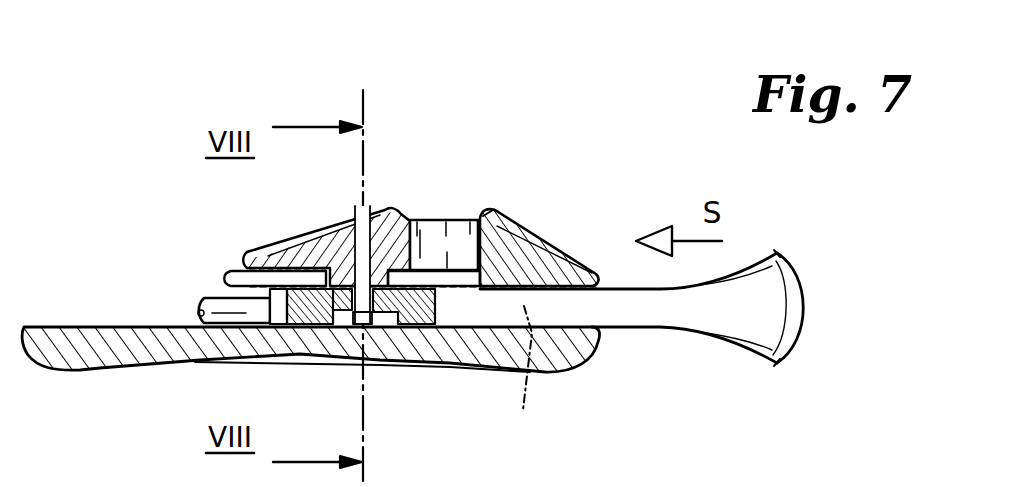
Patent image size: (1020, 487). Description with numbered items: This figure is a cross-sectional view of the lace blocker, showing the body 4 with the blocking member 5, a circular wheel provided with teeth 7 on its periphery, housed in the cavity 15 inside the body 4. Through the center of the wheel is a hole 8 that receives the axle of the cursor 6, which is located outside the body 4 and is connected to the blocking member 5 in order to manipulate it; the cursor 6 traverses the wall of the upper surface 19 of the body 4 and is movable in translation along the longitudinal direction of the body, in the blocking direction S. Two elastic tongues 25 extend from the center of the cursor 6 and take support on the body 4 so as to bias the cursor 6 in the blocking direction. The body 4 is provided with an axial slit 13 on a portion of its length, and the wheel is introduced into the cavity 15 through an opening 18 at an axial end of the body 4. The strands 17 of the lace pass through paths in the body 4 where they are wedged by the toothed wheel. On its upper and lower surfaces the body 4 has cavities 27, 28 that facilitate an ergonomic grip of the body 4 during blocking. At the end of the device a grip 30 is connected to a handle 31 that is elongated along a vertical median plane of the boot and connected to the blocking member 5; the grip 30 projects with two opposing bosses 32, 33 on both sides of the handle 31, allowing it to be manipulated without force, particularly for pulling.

The body 4 is at (488, 208).
The blocking member 5 is at (317, 303).
The cursor 6 is at (247, 257).
The teeth 7 is at (277, 313).
The hole 8 is at (343, 326).
The axial slit 13 is at (371, 330).
The cavity 15 is at (542, 372).
The strands 17 is at (207, 300).
The opening 18 is at (603, 333).
The upper surface 19 is at (473, 142).
The elastic tongues 25 is at (432, 230).
The cavity 27 is at (452, 370).
The cavity 28 is at (537, 242).
The grip 30 is at (797, 308).
The handle 31 is at (701, 320).
The boss 32 is at (777, 254).
The boss 33 is at (777, 362).